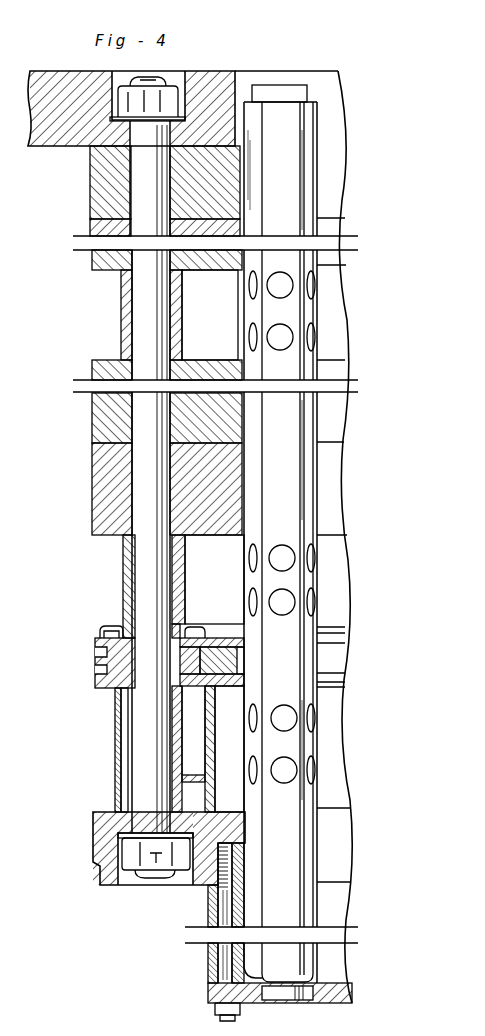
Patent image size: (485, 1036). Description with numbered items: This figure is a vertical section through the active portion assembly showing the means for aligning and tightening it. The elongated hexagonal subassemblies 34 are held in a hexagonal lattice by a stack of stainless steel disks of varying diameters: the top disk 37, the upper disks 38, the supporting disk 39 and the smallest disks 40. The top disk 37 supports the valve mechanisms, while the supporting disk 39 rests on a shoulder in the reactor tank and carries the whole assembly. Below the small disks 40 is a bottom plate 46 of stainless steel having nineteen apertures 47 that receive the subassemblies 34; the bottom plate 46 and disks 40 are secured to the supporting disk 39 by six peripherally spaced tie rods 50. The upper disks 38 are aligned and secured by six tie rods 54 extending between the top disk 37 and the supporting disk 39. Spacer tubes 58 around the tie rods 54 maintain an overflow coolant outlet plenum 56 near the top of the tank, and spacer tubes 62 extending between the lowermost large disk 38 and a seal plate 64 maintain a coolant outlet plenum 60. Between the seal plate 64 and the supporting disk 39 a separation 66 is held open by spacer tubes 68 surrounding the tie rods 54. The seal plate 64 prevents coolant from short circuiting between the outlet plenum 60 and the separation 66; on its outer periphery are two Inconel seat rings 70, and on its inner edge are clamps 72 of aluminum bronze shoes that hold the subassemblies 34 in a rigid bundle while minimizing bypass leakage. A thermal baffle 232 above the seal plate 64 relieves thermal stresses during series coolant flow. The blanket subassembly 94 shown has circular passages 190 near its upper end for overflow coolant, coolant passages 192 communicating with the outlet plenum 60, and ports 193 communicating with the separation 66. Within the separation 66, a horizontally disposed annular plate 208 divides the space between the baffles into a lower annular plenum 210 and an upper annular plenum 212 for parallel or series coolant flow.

The subassembly 34 is at (313, 82).
The top disk 37 is at (62, 147).
The upper disk 38 is at (93, 225).
The supporting disk 39 is at (100, 828).
The disk 40 is at (210, 955).
The bottom plate 46 is at (207, 993).
The aperture 47 is at (270, 1003).
The tie rod 50 is at (222, 902).
The tie rod 54 is at (143, 305).
The overflow coolant outlet plenum 56 is at (225, 315).
The spacer tube 58 is at (121, 285).
The coolant outlet plenum 60 is at (233, 581).
The spacer tube 62 is at (123, 588).
The seal plate 64 is at (96, 646).
The separation 66 is at (245, 730).
The spacer tube 68 is at (121, 732).
The seat ring 70 is at (96, 672).
The clamp 72 is at (213, 655).
The blanket subassembly 94 is at (290, 476).
The circular passage 190 is at (306, 325).
The coolant passage 192 is at (296, 573).
The port 193 is at (284, 770).
The annular plate 208 is at (126, 760).
The lower annular plenum 210 is at (193, 783).
The upper annular plenum 212 is at (190, 710).
The thermal baffle 232 is at (101, 628).